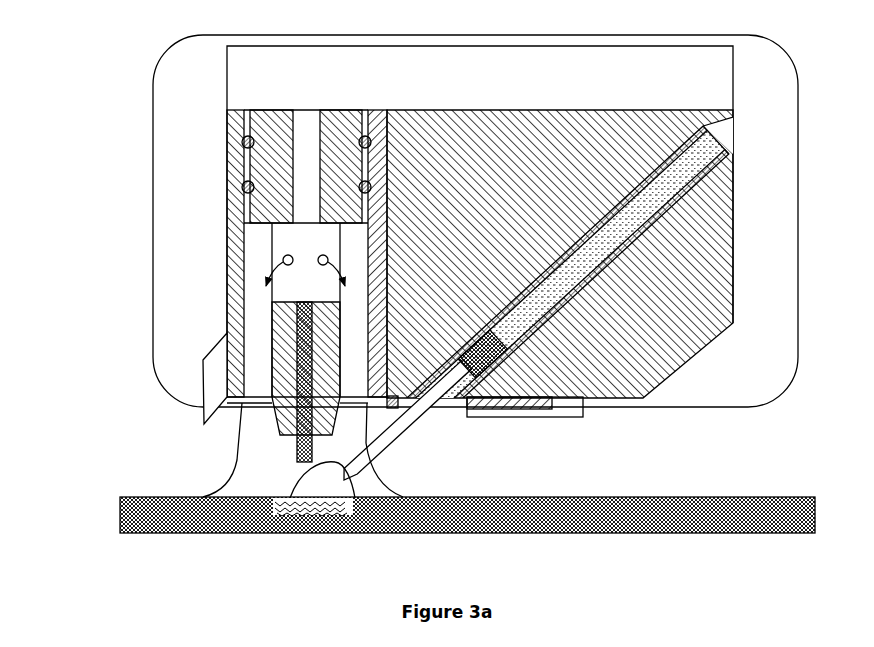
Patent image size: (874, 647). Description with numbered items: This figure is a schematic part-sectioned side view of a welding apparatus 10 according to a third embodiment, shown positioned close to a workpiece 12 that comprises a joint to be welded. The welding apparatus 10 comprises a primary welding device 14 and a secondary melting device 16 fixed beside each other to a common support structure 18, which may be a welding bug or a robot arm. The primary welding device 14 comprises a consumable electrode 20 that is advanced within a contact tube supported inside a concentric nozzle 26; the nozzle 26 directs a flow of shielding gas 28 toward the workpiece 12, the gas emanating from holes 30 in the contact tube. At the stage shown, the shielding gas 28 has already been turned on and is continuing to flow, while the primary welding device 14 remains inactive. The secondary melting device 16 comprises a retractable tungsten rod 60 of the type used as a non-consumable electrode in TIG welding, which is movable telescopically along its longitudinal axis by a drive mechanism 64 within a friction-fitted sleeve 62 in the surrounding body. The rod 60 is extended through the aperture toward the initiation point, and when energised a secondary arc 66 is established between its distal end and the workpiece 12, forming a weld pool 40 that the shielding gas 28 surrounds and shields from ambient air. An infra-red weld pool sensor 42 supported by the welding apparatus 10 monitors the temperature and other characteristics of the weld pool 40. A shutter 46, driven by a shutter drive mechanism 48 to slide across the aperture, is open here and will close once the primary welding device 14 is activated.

The welding apparatus 10 is at (432, 251).
The workpiece 12 is at (752, 497).
The primary welding device 14 is at (222, 157).
The secondary melting device 16 is at (752, 212).
The support structure 18 is at (155, 298).
The consumable electrode 20 is at (297, 443).
The nozzle 26 is at (226, 286).
The shielding gas 28 is at (230, 472).
The holes 30 is at (305, 345).
The weld pool 40 is at (312, 516).
The infra-red weld pool sensor 42 is at (215, 357).
The shutter 46 is at (497, 407).
The shutter drive mechanism 48 is at (572, 408).
The retractable tungsten rod 60 is at (400, 428).
The friction-fitted sleeve 62 is at (691, 132).
The drive mechanism 64 is at (699, 170).
The secondary arc 66 is at (313, 488).